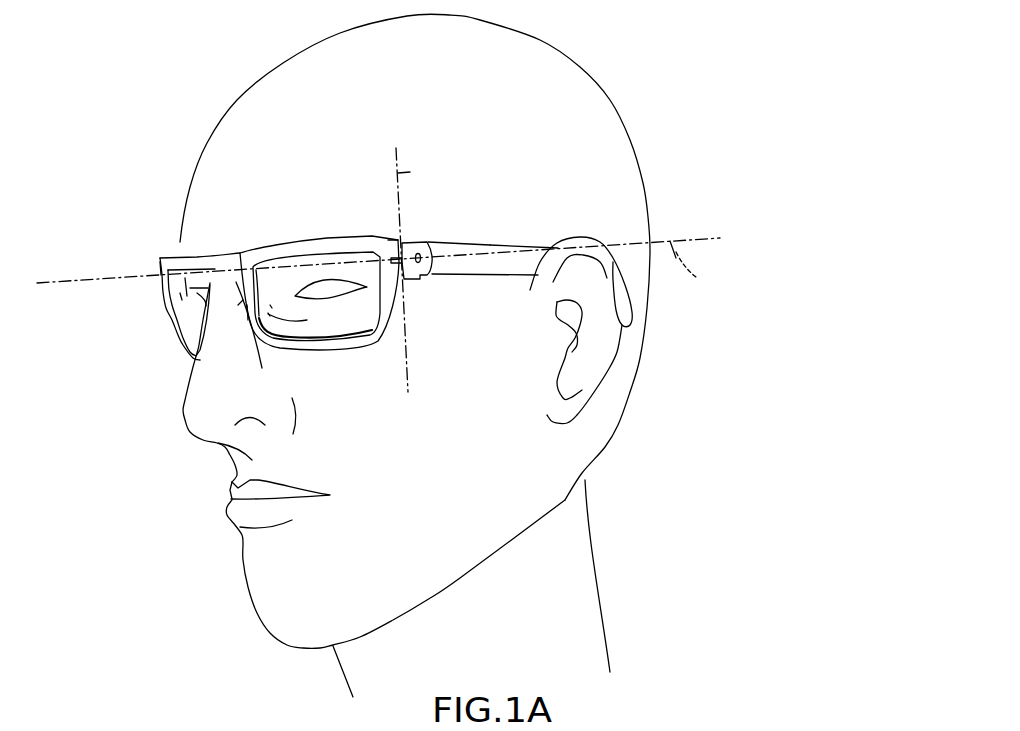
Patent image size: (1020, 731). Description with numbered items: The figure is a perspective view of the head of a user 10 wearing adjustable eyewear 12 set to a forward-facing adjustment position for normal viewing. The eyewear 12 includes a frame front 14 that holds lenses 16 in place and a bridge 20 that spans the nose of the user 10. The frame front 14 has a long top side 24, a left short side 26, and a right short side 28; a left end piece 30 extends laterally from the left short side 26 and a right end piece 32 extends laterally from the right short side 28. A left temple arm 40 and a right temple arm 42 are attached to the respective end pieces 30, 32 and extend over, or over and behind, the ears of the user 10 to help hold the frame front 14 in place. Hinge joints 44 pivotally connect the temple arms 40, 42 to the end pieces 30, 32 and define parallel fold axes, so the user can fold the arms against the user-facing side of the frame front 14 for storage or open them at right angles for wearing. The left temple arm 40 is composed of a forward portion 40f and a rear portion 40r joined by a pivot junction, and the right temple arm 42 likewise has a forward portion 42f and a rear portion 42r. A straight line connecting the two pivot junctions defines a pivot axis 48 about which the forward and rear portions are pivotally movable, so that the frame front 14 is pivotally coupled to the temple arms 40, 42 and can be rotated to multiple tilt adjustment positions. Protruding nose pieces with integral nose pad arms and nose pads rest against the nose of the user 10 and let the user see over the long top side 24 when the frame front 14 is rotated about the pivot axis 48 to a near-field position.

The user 10 is at (624, 82).
The adjustable eyewear 12 is at (382, 273).
The frame front 14 is at (253, 266).
The lenses 16 is at (190, 338).
The bridge 20 is at (230, 258).
The long top side 24 is at (276, 247).
The left short side 26 is at (392, 271).
The right short side 28 is at (173, 337).
The left end piece 30 is at (387, 238).
The right end piece 32 is at (160, 285).
The left temple arm 40 is at (496, 227).
The forward portion of left temple arm 40f is at (420, 240).
The rear portion of left temple arm 40r is at (539, 250).
The right temple arm 42 is at (261, 718).
The forward portion of right temple arm 42f is at (180, 293).
The rear portion of right temple arm 42r is at (358, 727).
The hinge joints 44 is at (439, 238).
The pivot axis 48 is at (382, 263).